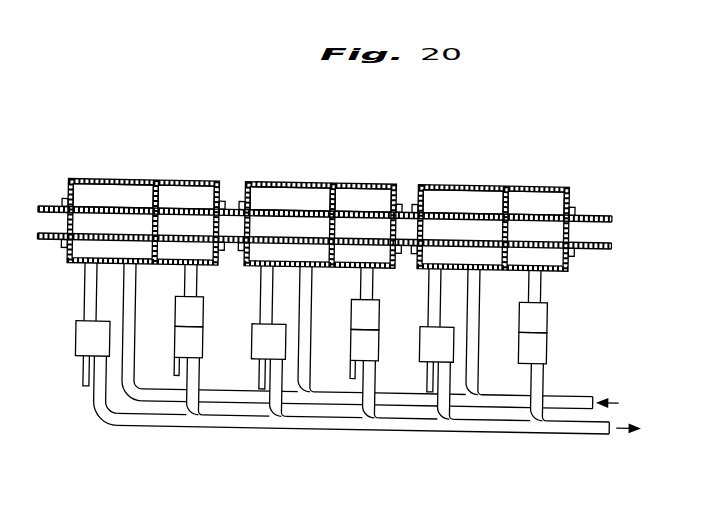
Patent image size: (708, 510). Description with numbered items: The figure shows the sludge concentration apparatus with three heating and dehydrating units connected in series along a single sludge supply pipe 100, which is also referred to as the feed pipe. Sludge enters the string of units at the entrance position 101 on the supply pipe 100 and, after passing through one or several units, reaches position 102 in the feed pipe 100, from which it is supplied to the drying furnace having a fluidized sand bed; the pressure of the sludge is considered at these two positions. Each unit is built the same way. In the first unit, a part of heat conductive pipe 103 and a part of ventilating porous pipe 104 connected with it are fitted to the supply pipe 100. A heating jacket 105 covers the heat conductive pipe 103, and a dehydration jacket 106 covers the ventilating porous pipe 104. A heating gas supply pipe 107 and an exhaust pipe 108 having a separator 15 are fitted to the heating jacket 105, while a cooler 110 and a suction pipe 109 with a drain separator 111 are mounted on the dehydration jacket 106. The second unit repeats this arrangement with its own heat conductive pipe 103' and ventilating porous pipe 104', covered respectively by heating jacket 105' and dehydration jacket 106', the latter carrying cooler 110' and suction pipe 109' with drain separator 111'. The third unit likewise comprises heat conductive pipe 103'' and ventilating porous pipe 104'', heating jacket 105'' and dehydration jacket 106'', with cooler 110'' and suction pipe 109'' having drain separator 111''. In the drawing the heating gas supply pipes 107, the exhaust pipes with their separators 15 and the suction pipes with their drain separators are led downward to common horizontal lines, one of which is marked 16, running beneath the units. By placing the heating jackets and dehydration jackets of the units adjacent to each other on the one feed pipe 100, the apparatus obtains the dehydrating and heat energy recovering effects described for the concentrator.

The separator 15 is at (92, 346).
The return conduit 16 is at (596, 426).
The supply pipe 100 is at (43, 240).
The entrance position 101 is at (50, 205).
The position in feed pipe 102 is at (590, 218).
The heat conductive pipe 103 is at (113, 175).
The ventilating porous pipe 104 is at (187, 176).
The jacket 105 is at (121, 202).
The jacket 106 is at (208, 204).
The heating gas supply pipe 107 is at (138, 356).
The exhaust pipe 108 is at (92, 302).
The suction pipe 109 is at (215, 281).
The cooler 110 is at (212, 311).
The drain separator 111 is at (210, 370).
The heat conductive pipe 103' is at (290, 181).
The ventilating porous pipe 104' is at (363, 178).
The jacket 105' is at (287, 203).
The jacket 106' is at (377, 206).
The suction pipe 109' is at (390, 285).
The cooler 110' is at (387, 314).
The drain separator 111' is at (387, 373).
The heat conductive pipe 103'' is at (463, 176).
The ventilating porous pipe 104'' is at (536, 180).
The jacket 105'' is at (464, 206).
The jacket 106'' is at (554, 208).
The suction pipe 109'' is at (575, 289).
The cooler 110'' is at (570, 318).
The drain separator 111'' is at (569, 377).